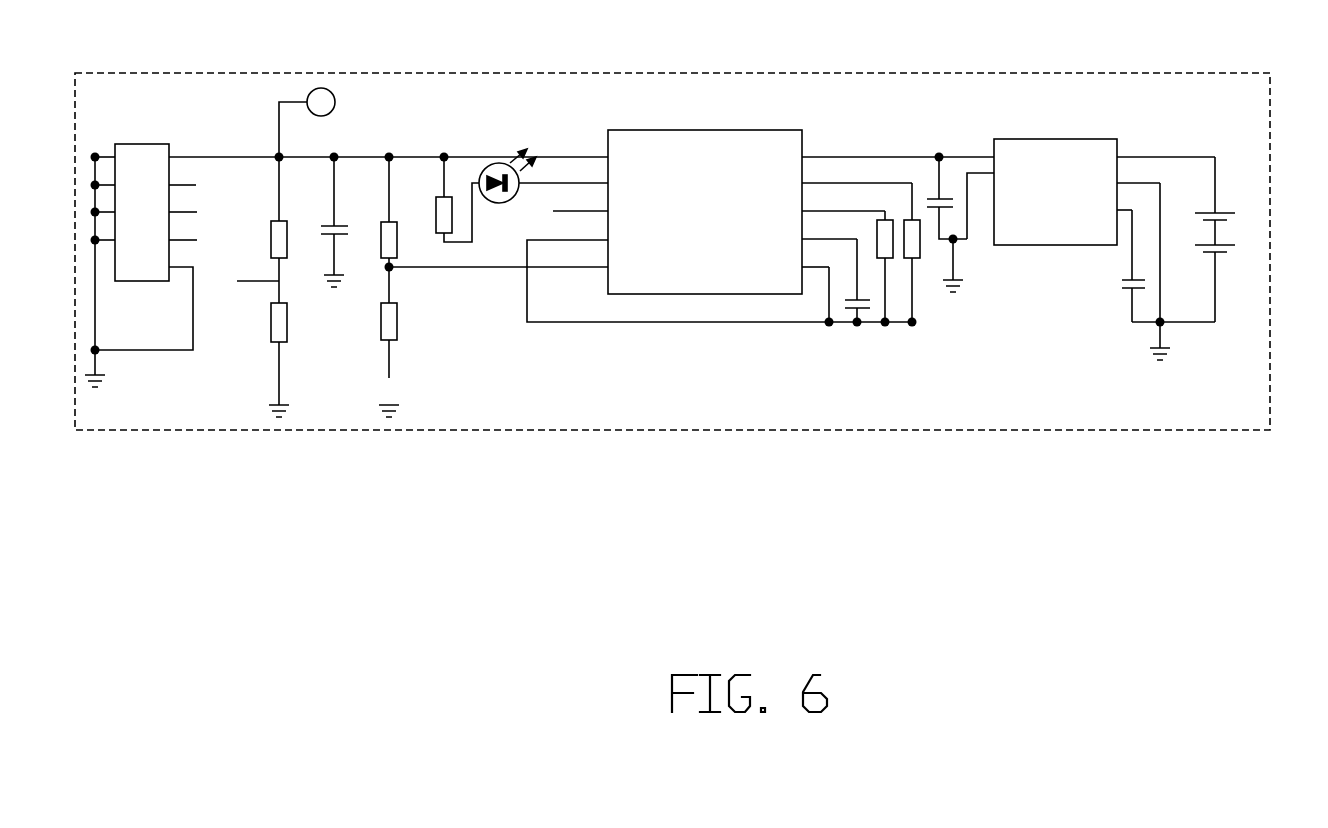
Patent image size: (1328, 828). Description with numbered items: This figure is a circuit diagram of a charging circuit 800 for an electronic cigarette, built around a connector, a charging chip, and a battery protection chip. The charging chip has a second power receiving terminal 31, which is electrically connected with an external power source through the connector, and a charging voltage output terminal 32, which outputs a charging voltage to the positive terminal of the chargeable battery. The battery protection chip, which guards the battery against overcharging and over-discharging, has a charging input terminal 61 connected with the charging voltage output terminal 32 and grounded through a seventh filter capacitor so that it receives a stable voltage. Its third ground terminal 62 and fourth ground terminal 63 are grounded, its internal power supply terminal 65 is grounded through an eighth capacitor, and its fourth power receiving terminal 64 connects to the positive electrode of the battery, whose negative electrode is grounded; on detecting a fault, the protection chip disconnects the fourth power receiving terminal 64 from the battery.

The charging circuit 800 is at (1270, 83).
The second power receiving terminal 31 is at (608, 153).
The charging voltage output terminal 32 is at (803, 144).
The charging input terminal 61 is at (993, 153).
The third ground terminal 62 is at (993, 174).
The fourth ground terminal 63 is at (1119, 179).
The fourth power receiving terminal 64 is at (1119, 153).
The internal power supply terminal 65 is at (1119, 206).